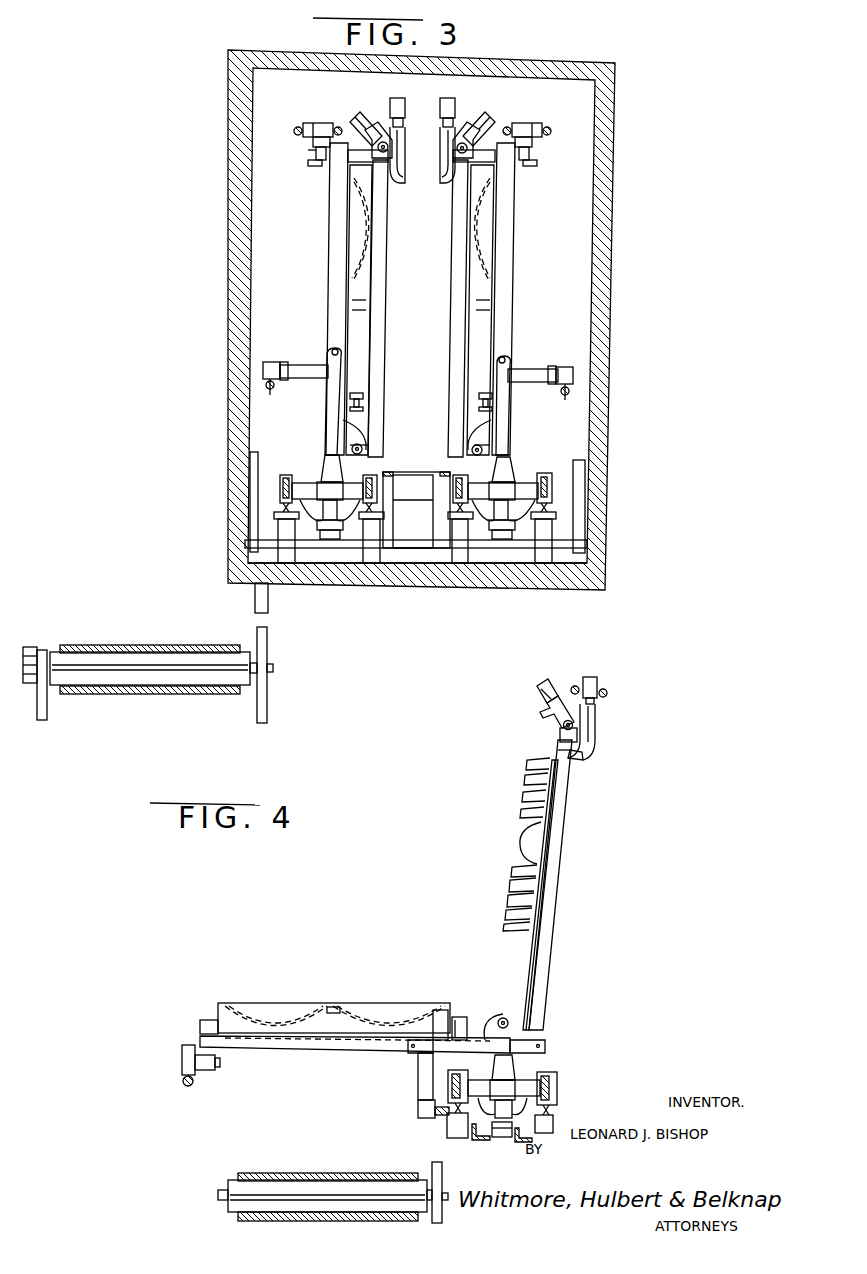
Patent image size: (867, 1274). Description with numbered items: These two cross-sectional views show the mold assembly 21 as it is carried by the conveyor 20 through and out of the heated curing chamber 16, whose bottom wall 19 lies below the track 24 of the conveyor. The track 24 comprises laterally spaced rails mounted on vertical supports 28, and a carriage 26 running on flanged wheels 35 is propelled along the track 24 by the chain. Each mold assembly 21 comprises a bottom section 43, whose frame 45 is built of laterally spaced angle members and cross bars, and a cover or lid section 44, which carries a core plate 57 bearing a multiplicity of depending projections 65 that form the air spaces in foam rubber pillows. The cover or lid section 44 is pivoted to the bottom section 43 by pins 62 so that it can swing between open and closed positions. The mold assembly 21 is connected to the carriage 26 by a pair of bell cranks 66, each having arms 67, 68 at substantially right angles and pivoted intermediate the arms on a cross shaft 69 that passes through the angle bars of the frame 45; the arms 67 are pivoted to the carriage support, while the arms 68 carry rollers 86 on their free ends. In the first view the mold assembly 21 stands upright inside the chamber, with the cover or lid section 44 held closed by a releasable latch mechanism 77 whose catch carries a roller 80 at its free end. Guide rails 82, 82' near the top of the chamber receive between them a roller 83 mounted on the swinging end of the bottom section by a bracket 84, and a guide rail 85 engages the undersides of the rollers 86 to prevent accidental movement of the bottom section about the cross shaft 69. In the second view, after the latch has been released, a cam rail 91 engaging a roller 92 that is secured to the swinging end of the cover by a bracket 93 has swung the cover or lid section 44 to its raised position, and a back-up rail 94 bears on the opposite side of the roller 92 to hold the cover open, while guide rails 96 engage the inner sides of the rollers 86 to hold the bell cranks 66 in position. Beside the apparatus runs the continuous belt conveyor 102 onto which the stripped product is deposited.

In FIG. 3, the curing chamber 16 is at (240, 352).
In FIG. 3, the bottom wall 19 is at (404, 585).
In FIG. 3, the conveyor 20 is at (303, 470).
In FIG. 4, the conveyor 20 is at (523, 1073).
In FIG. 3, the mold assembly 21 is at (518, 302).
In FIG. 4, the mold assembly 21 is at (553, 963).
In FIG. 3, the track 24 is at (275, 506).
In FIG. 3, the carriage 26 is at (278, 490).
In FIG. 4, the carriage 26 is at (560, 1098).
In FIG. 3, the vertical supports 28 is at (287, 560).
In FIG. 4, the flanged wheels 35 is at (553, 1082).
In FIG. 4, the bottom section 43 is at (345, 1018).
In FIG. 3, the cover or lid section 44 is at (450, 233).
In FIG. 4, the cover or lid section 44 is at (560, 898).
In FIG. 3, the frame 45 is at (328, 228).
In FIG. 4, the frame 45 is at (340, 1051).
In FIG. 4, the core plate 57 is at (530, 844).
In FIG. 4, the pins 62 is at (502, 1016).
In FIG. 4, the depending projections 65 is at (530, 762).
In FIG. 3, the bell cranks 66 is at (290, 363).
In FIG. 4, the bell cranks 66 is at (407, 1059).
In FIG. 3, the arms 67 is at (340, 386).
In FIG. 4, the arms 67 is at (436, 1012).
In FIG. 3, the arms 68 is at (313, 379).
In FIG. 4, the arms 68 is at (418, 1076).
In FIG. 3, the cross shaft 69 is at (338, 354).
In FIG. 3, the releasable latch mechanism 77 is at (381, 138).
In FIG. 4, the releasable latch mechanism 77 is at (547, 678).
In FIG. 3, the roller 80 is at (360, 116).
In FIG. 3, the guide rail 82 is at (424, 118).
In FIG. 4, the guide rail 82 is at (204, 1089).
In FIG. 3, the guide rail 82' is at (437, 111).
In FIG. 3, the roller 83 is at (311, 137).
In FIG. 4, the roller 83 is at (183, 1065).
In FIG. 3, the bracket 84 is at (318, 161).
In FIG. 4, the bracket 84 is at (212, 1069).
In FIG. 3, the guide rail 85 is at (270, 397).
In FIG. 3, the rollers 86 is at (270, 362).
In FIG. 4, the rollers 86 is at (418, 1108).
In FIG. 4, the cam rail 91 is at (575, 685).
In FIG. 3, the roller 92 is at (402, 112).
In FIG. 4, the roller 92 is at (592, 682).
In FIG. 4, the bracket 93 is at (582, 756).
In FIG. 4, the back-up rail 94 is at (607, 693).
In FIG. 4, the guide rails 96 is at (435, 1120).
In FIG. 3, the conveyor 102 is at (185, 690).
In FIG. 4, the conveyor 102 is at (320, 1178).